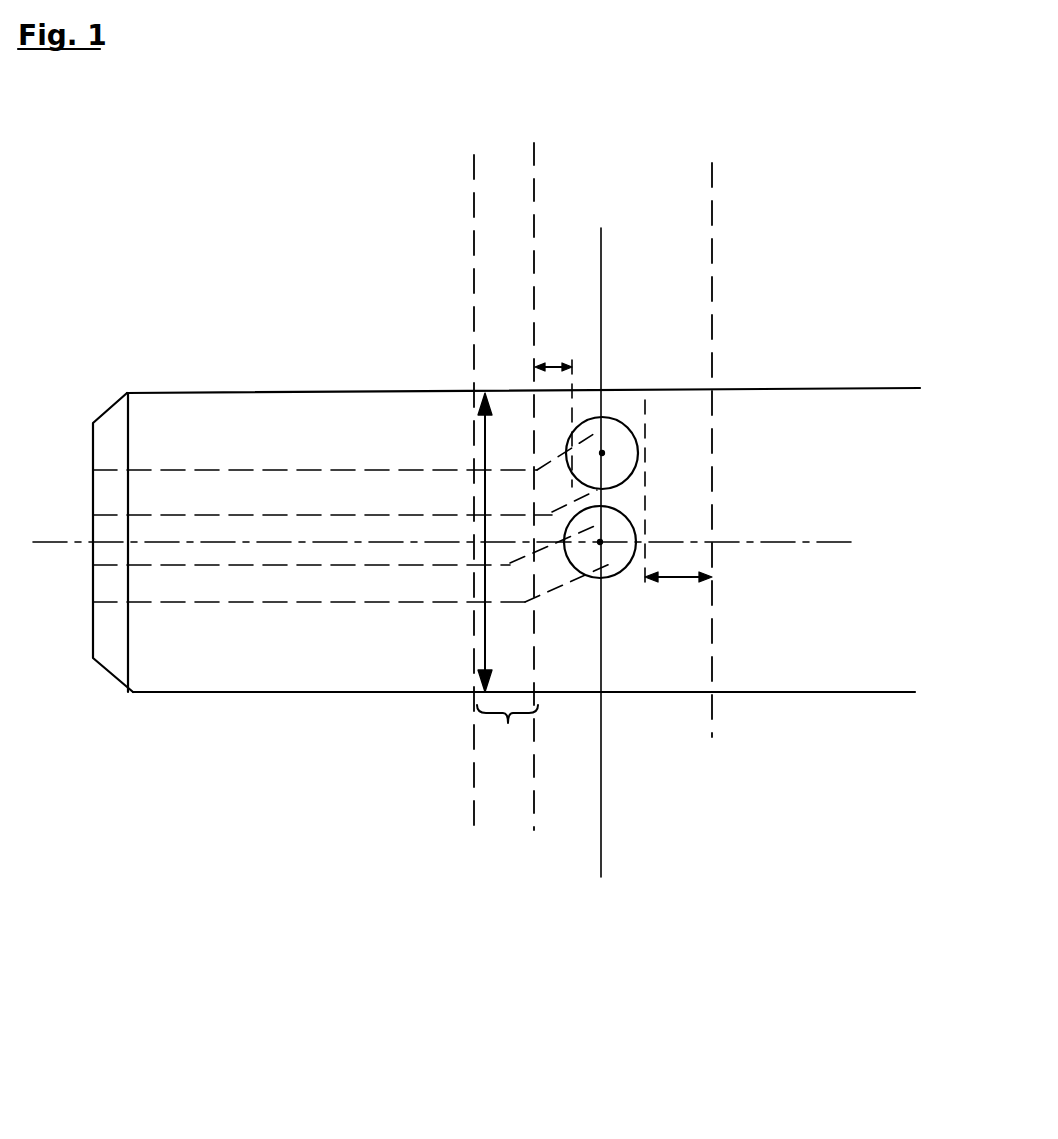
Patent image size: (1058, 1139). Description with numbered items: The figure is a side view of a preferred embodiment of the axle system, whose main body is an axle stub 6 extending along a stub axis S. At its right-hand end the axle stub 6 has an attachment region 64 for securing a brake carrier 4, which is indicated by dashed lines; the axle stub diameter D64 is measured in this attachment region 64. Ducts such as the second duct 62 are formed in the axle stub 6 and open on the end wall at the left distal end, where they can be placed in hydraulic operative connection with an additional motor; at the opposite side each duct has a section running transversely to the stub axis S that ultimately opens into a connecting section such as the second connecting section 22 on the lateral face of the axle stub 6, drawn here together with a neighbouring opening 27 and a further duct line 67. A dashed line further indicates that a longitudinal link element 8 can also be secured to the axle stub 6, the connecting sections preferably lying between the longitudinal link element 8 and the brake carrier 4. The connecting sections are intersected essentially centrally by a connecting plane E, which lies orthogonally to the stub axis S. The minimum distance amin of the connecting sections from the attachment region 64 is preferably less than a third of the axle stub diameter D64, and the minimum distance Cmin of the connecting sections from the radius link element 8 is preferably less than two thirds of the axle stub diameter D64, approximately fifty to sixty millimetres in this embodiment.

The brake carrier 4 is at (535, 225).
The axle stub 6 is at (175, 675).
The longitudinal link element 8 is at (712, 672).
The second connecting section 22 is at (641, 537).
The coolant outlet opening 27 is at (648, 428).
The second duct 62 is at (376, 605).
The attachment region 64 is at (508, 723).
The coolant channel 67 is at (388, 467).
The stub axis S is at (228, 532).
The connecting plane E is at (601, 763).
The axle stub diameter D64 is at (484, 450).
The distance between connecting sections and attachment region amin is at (553, 367).
The distance between connecting sections and radius link element Cmin is at (682, 575).